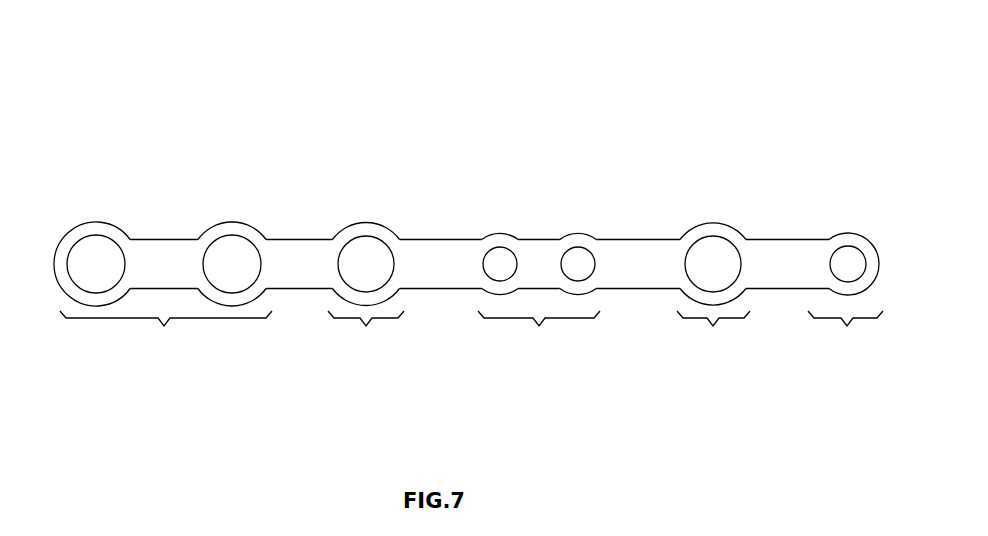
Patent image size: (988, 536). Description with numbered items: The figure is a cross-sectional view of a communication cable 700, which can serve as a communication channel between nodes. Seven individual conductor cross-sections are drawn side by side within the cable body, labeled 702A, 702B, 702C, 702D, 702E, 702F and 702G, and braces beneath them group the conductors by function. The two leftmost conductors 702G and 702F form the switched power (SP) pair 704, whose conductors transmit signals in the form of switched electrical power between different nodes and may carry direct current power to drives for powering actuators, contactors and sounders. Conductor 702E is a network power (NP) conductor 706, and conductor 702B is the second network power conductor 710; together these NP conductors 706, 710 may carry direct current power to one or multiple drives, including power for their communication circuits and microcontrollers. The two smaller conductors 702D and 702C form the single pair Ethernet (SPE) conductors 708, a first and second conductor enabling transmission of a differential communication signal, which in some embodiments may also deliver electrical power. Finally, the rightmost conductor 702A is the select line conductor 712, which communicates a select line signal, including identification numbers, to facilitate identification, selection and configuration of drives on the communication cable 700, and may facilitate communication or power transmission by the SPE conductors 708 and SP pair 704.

The communication cable 700 is at (719, 58).
The select contact pad 702A is at (878, 262).
The NP- contact pad 702B is at (733, 226).
The SPE- contact pad 702C is at (594, 232).
The SPE+ contact pad 702D is at (493, 236).
The NP+ contact pad 702E is at (348, 229).
The SP+ contact pad 702F is at (213, 228).
The SP- contact pad 702G is at (78, 228).
The switched power (SP) pair 704 is at (166, 332).
The network power (NP) conductor 706 is at (366, 332).
The single pair Ethernet (SPE) conductors 708 is at (539, 332).
The network power (NP) conductor 710 is at (713, 332).
The select line conductor 712 is at (845, 332).